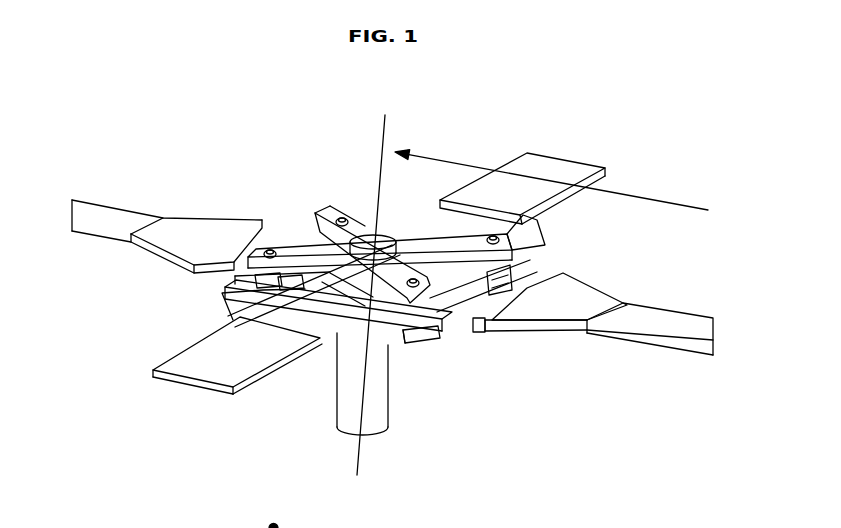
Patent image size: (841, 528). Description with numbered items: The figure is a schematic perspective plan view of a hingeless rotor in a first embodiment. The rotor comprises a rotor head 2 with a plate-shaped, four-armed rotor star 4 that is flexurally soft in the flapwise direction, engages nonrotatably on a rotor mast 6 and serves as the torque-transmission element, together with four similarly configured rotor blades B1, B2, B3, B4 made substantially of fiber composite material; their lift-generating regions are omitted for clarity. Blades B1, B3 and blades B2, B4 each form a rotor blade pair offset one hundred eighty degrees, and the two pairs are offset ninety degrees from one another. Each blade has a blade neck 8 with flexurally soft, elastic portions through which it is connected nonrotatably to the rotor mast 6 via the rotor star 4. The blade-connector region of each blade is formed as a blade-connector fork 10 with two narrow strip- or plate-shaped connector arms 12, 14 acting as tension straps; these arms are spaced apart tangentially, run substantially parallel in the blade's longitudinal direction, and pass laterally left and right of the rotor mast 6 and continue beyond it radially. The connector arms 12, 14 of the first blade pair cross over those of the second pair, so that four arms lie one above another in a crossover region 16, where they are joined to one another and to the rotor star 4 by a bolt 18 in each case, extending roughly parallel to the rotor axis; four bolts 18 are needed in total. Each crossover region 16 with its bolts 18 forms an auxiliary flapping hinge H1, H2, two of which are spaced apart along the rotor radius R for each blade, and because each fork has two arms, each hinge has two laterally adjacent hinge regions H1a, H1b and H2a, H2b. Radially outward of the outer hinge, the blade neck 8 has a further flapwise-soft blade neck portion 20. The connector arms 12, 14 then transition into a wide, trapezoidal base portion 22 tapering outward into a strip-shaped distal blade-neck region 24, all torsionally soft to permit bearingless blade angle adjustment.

The rotor head 2 is at (414, 133).
The rotor star 4 is at (358, 212).
The rotor mast 6 is at (348, 396).
The blade neck 8 is at (560, 357).
The blade-connector fork 10 is at (254, 178).
The connector arm 12 is at (238, 272).
The connector arm 14 is at (287, 244).
The crossover region 16 is at (428, 371).
The bolt 18 is at (266, 246).
The blade neck portion 20 is at (556, 272).
The base portion 22 is at (82, 237).
The blade-neck region 24 is at (172, 247).
The rotor blade B1 is at (703, 350).
The rotor blade B2 is at (190, 386).
The rotor blade B3 is at (82, 207).
The rotor blade B4 is at (604, 170).
The auxiliary flapping hinge H1 is at (503, 64).
The hinge region H1a is at (494, 220).
The hinge region H1b is at (395, 238).
The auxiliary flapping hinge H2 is at (288, 116).
The hinge region H2a is at (269, 247).
The hinge region H2b is at (326, 204).
The rotor radius R is at (551, 180).